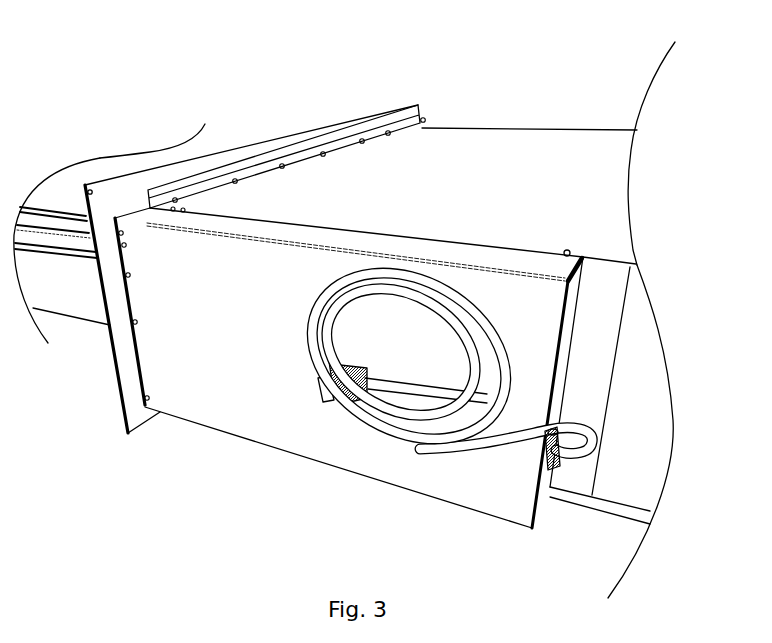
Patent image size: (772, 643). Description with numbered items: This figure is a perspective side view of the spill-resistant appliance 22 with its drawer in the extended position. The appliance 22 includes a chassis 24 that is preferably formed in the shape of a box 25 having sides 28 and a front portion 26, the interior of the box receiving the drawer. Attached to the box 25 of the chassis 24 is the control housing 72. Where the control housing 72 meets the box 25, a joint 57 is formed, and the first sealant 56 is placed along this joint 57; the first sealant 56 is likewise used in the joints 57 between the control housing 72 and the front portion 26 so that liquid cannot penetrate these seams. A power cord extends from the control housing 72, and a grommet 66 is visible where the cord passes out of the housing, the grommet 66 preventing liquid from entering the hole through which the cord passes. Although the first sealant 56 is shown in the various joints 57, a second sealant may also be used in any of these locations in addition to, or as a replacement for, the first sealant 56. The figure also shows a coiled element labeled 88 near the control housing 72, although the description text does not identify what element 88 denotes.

The appliance 22 is at (613, 163).
The chassis 24 is at (645, 266).
The box 25 is at (513, 150).
The front portion 26 is at (100, 207).
The sides 28 is at (647, 329).
The first sealant 56 is at (141, 211).
The joint 57 is at (115, 217).
The grommet 66 is at (552, 468).
The control housing 72 is at (287, 293).
The flexible hose coil 88 is at (462, 312).